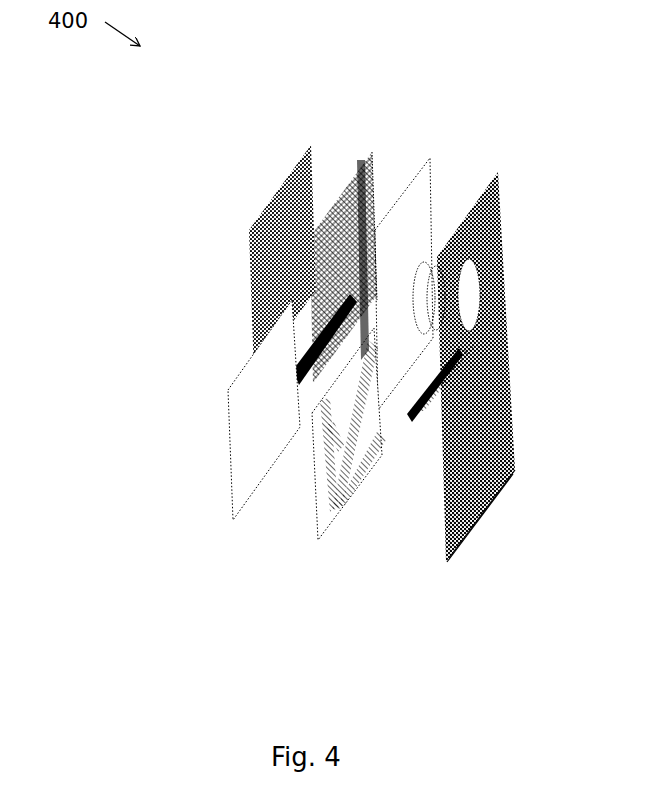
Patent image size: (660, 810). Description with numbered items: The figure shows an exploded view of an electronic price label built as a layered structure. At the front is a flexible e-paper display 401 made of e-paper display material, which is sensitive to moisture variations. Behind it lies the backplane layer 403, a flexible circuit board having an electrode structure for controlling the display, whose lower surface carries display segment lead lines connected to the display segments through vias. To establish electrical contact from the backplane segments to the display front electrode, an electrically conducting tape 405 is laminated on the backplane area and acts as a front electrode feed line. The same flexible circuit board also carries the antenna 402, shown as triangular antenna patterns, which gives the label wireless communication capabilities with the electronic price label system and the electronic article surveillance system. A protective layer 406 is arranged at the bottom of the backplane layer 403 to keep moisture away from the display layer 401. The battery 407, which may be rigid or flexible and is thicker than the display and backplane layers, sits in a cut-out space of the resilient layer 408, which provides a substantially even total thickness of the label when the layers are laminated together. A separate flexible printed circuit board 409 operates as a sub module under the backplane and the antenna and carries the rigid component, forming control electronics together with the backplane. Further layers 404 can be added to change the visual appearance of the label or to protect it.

The flexible e-paper display 401 is at (272, 232).
The antenna 402 is at (347, 492).
The backplane layer 403 is at (337, 250).
The further layers 404 is at (243, 447).
The electrically conducting tape 405 is at (310, 372).
The protective layer 406 is at (407, 222).
The battery 407 is at (438, 275).
The resilient layer 408 is at (488, 290).
The separate flexible printed circuit board 409 is at (412, 417).